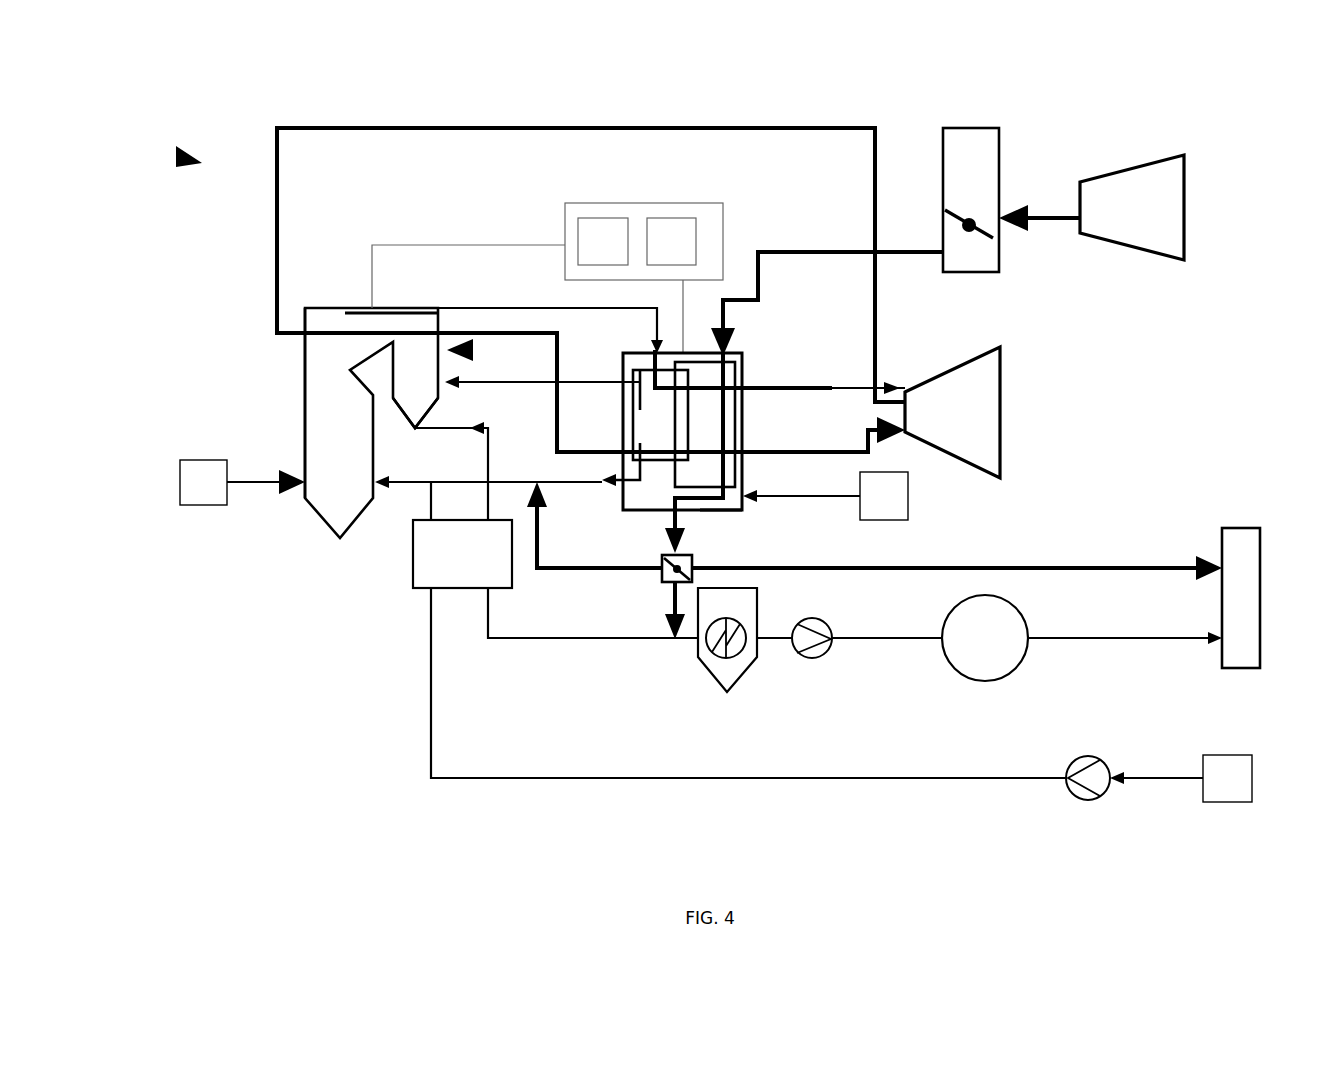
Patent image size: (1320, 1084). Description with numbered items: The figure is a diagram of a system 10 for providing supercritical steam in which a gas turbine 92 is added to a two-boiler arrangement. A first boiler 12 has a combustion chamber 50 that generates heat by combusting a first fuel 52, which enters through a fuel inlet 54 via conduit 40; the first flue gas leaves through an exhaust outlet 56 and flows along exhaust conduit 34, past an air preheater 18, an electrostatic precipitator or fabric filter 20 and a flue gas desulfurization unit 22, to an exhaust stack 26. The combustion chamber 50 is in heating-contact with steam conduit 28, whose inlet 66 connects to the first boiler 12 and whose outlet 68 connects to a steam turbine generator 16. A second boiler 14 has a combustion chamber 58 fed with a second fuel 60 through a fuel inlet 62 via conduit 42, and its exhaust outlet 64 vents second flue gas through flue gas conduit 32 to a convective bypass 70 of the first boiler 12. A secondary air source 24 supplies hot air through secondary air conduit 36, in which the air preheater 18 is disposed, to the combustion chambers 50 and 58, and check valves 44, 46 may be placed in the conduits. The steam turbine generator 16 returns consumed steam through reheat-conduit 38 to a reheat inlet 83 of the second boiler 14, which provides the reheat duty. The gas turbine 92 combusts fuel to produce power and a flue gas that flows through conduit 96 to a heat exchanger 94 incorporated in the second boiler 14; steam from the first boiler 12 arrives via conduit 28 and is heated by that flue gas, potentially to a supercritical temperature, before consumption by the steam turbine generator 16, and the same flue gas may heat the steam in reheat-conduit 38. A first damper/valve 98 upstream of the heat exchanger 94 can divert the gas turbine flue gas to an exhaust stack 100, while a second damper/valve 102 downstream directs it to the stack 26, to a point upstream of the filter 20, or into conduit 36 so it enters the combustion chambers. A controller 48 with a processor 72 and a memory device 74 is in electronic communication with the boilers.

The system 10 is at (180, 157).
The first boiler 12 is at (303, 394).
The second boiler 14 is at (745, 358).
The steam turbine generator 16 is at (952, 412).
The air preheater 18 is at (462, 554).
The electrostatic precipitator and/or fabric filter 20 is at (727, 640).
The flue gas desulfurization unit 22 is at (985, 638).
The secondary air source 24 is at (1227, 778).
The exhaust stack 26 is at (1241, 598).
The steam conduit 28 is at (352, 306).
The flue gas conduit 32 is at (548, 380).
The exhaust conduit 34 is at (491, 445).
The secondary air conduit 36 is at (446, 480).
The reheat-conduit 38 is at (459, 126).
The conduit 40 is at (241, 485).
The conduit 42 is at (812, 494).
The check valve 44 is at (1088, 778).
The check valve 46 is at (812, 638).
The controller 48 is at (583, 200).
The combustion chamber 50 is at (371, 423).
The first fuel 52 is at (203, 482).
The fuel inlet 54 is at (302, 478).
The exhaust outlet 56 is at (430, 424).
The combustion chamber 58 is at (660, 415).
The second fuel 60 is at (884, 496).
The fuel inlet 62 is at (746, 506).
The exhaust outlet 64 is at (620, 380).
The inlet 66 is at (439, 309).
The outlet 68 is at (899, 385).
The convective bypass 70 is at (474, 350).
The processor 72 is at (603, 241).
The memory device 74 is at (671, 241).
The reheat inlet 83 is at (620, 450).
The gas turbine 92 is at (1132, 207).
The heat exchanger 94 is at (741, 431).
The conduit 96 is at (805, 250).
The first damper/valve 98 is at (972, 232).
The exhaust stack 100 is at (971, 200).
The second damper/valve 102 is at (662, 563).